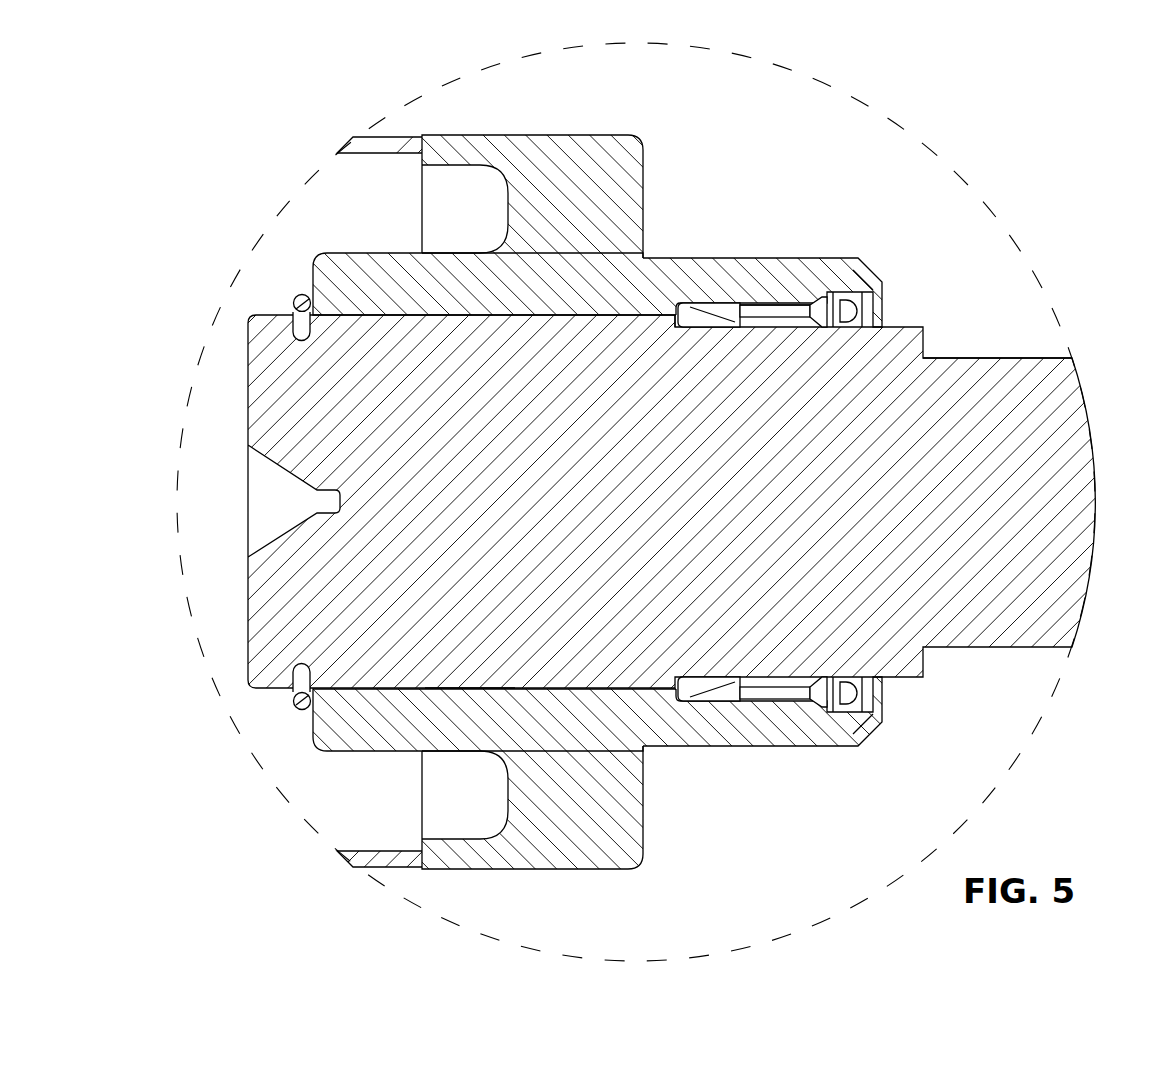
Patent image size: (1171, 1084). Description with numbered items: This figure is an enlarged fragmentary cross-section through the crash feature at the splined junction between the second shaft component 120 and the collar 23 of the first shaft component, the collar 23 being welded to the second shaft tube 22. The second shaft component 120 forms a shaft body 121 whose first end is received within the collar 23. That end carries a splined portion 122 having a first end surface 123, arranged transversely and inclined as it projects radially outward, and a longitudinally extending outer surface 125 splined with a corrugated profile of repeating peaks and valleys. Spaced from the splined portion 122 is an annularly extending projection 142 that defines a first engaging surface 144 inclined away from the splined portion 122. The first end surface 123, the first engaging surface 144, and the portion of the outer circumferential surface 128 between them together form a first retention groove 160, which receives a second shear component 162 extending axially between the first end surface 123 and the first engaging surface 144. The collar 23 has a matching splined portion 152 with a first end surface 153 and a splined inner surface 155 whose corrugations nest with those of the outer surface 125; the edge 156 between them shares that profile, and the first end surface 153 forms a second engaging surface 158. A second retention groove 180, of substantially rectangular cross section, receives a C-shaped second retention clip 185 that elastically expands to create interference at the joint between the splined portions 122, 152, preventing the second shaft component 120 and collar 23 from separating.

The second shaft tube 22 is at (383, 858).
The collar 23 is at (541, 137).
The second shaft component 120 is at (958, 356).
The shaft body 121 is at (990, 358).
The splined portion 122 is at (567, 312).
The first end surface 123 is at (712, 311).
The outer surface 125 is at (670, 316).
The outer circumferential surface 128 is at (762, 305).
The projection 142 is at (833, 292).
The first engaging surface 144 is at (814, 300).
The splined portion 152 is at (502, 684).
The first end surface 153 is at (690, 303).
The inner surface 155 is at (457, 690).
The edge 156 is at (676, 322).
The second engaging surface 158 is at (776, 249).
The first retention groove 160 is at (748, 304).
The second shear component 162 is at (716, 702).
The second retention groove 180 is at (300, 326).
The second retention clip 185 is at (300, 292).